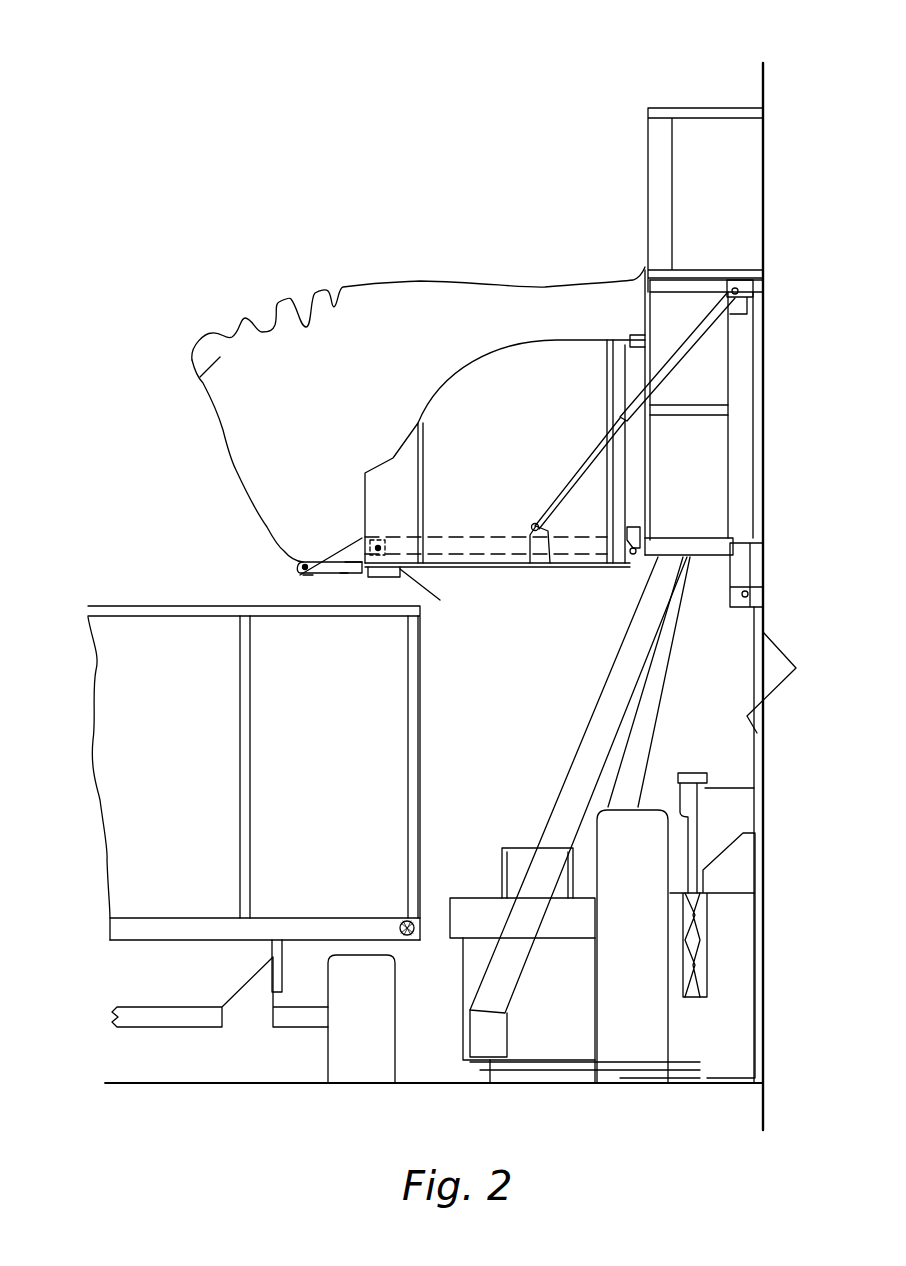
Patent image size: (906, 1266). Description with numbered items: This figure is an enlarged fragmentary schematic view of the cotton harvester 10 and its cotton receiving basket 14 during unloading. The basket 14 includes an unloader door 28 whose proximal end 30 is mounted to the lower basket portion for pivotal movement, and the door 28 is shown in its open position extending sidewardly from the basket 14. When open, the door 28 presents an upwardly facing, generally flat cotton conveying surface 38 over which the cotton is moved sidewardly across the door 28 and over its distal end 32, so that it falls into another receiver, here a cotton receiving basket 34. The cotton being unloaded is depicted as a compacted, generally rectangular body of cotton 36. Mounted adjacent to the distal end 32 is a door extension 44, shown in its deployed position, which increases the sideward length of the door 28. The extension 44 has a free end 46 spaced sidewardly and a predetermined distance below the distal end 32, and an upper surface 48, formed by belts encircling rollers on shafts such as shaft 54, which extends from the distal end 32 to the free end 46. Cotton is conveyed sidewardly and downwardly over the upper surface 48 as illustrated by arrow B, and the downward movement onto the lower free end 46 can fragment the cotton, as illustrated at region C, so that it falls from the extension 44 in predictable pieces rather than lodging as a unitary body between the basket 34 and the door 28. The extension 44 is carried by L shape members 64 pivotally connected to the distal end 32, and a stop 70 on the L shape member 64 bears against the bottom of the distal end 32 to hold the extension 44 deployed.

The cotton harvester 10 is at (826, 90).
The cotton receiving basket 14 is at (708, 106).
The unloader door 28 is at (518, 568).
The proximal end 30 is at (623, 566).
The distal end 32 is at (374, 578).
The cotton receiving basket 34 is at (108, 884).
The body of cotton 36 is at (470, 280).
The cotton conveying surface 38 is at (455, 538).
The door extension 44 is at (308, 584).
The free end 46 is at (298, 570).
The upper surface 48 is at (350, 560).
The shaft 54 is at (298, 575).
The L shape member 64 is at (344, 575).
The stop 70 is at (400, 577).
The arrow B is at (295, 530).
The region C is at (335, 257).